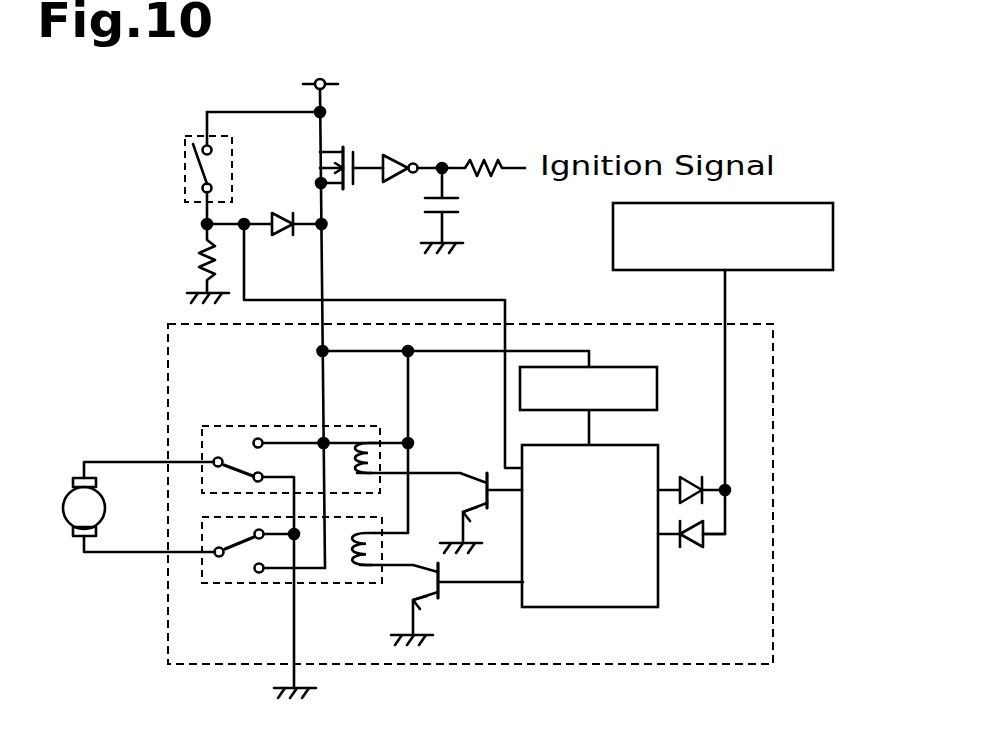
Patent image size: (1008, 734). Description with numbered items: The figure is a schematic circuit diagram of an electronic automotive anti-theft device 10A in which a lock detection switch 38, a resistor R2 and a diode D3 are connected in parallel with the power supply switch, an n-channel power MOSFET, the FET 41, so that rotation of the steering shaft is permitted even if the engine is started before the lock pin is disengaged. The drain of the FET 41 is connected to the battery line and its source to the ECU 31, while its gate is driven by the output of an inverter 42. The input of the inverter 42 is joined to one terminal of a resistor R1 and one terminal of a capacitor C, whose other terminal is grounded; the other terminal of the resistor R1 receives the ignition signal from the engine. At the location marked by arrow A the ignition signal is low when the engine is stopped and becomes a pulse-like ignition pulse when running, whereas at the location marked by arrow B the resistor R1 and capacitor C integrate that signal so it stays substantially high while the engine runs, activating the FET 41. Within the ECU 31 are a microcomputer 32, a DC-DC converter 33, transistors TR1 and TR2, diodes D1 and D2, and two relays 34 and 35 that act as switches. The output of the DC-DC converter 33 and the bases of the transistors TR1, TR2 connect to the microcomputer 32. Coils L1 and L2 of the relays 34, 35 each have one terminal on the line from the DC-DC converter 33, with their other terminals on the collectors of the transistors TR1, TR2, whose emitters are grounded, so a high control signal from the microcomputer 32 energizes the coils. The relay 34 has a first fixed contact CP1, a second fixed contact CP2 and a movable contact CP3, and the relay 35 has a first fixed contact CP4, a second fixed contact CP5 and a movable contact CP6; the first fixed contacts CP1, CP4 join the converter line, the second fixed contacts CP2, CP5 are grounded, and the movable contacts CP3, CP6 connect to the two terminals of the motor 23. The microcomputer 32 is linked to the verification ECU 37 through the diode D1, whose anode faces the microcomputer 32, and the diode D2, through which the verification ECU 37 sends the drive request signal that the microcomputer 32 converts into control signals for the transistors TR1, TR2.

The electronic control system 10A is at (705, 116).
The motor 23 is at (64, 498).
The ECU 31 is at (776, 583).
The microcomputer 32 is at (639, 608).
The DC-DC converter 33 is at (637, 367).
The relay 34 is at (345, 426).
The relay 35 is at (315, 588).
The verification ECU 37 is at (834, 234).
The lock detection switch 38 is at (186, 160).
The FET 41 is at (357, 150).
The inverter 42 is at (394, 181).
The arrow A location A is at (512, 166).
The arrow B location B is at (424, 166).
The capacitor C is at (459, 213).
The resistor R1 is at (492, 175).
The resistor R2 is at (207, 243).
The diode D1 is at (692, 477).
The diode D2 is at (697, 547).
The diode D3 is at (283, 228).
The coil L1 is at (374, 442).
The coil L2 is at (363, 567).
The transistor TR1 is at (475, 474).
The transistor TR2 is at (445, 597).
The first fixed contact CP1 is at (260, 437).
The second fixed contact CP2 is at (252, 473).
The movable contact CP3 is at (216, 457).
The first fixed contact CP4 is at (260, 577).
The second fixed contact CP5 is at (238, 543).
The movable contact CP6 is at (215, 558).